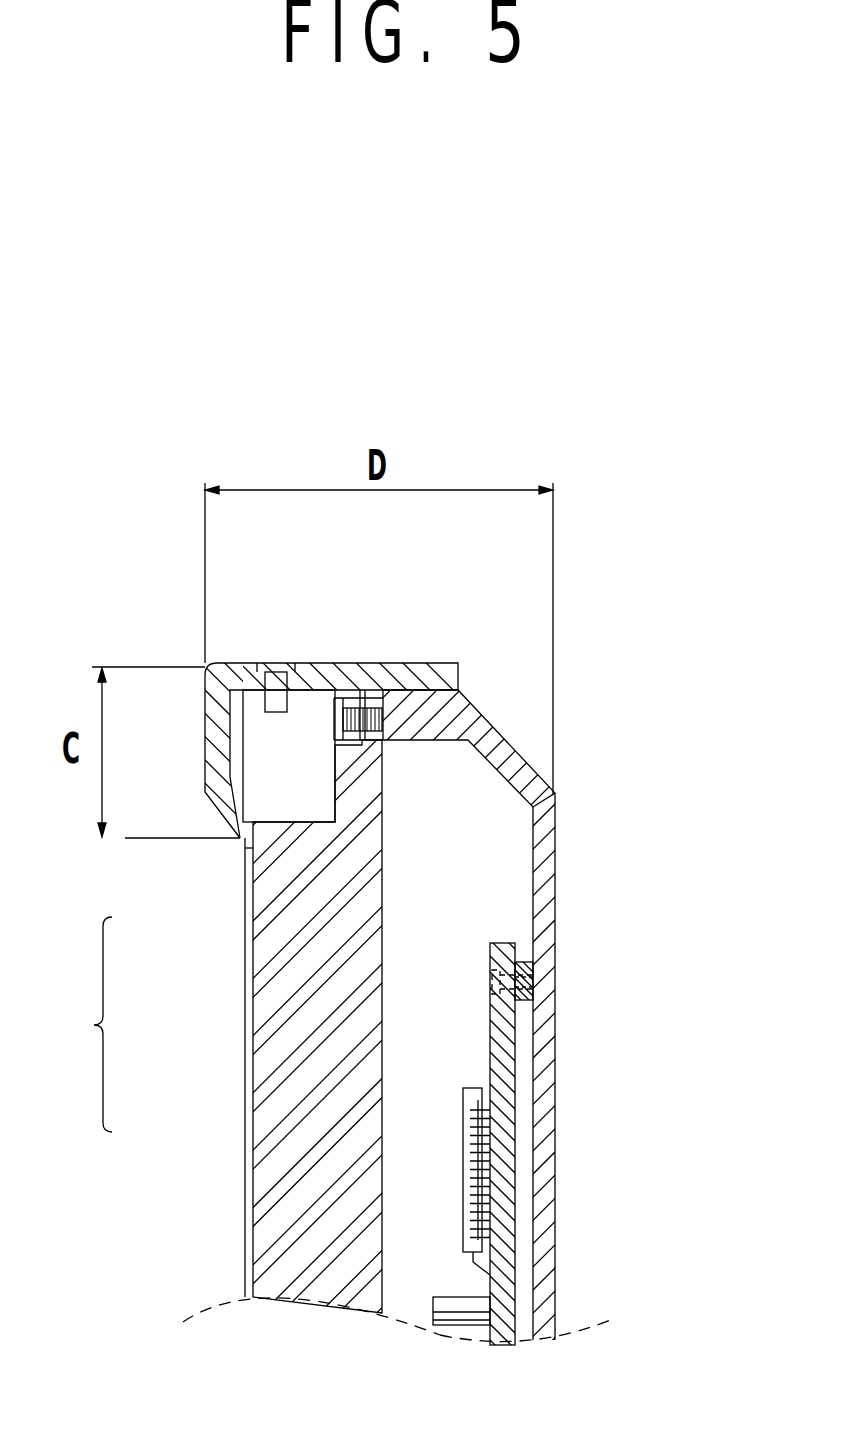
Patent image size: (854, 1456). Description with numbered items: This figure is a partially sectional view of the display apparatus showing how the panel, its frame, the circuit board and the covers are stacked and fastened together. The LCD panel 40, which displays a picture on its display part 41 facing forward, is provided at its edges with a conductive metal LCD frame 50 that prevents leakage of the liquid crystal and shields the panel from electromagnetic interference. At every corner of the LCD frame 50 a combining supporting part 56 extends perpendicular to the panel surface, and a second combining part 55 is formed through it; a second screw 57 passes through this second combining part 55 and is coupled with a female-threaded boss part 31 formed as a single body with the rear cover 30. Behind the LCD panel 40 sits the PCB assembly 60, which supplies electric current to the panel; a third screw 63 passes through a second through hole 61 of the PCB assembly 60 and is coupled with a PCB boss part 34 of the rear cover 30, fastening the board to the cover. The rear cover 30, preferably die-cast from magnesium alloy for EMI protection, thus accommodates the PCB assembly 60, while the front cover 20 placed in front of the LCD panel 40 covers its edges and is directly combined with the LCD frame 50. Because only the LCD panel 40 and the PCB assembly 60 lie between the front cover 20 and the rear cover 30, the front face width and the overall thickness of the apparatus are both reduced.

The front cover 20 is at (246, 652).
The rear cover 30 is at (574, 1105).
The boss part 31 is at (433, 742).
The PCB boss part 34 is at (540, 962).
The LCD panel 40 is at (85, 1043).
The display part 41 is at (245, 1133).
The LCD frame 50 is at (290, 802).
The second combining part 55 is at (370, 664).
The combining supporting part 56 is at (335, 768).
The second screw 57 is at (334, 700).
The PCB assembly 60 is at (515, 1180).
The second through hole 61 is at (525, 962).
The third screw 63 is at (558, 988).